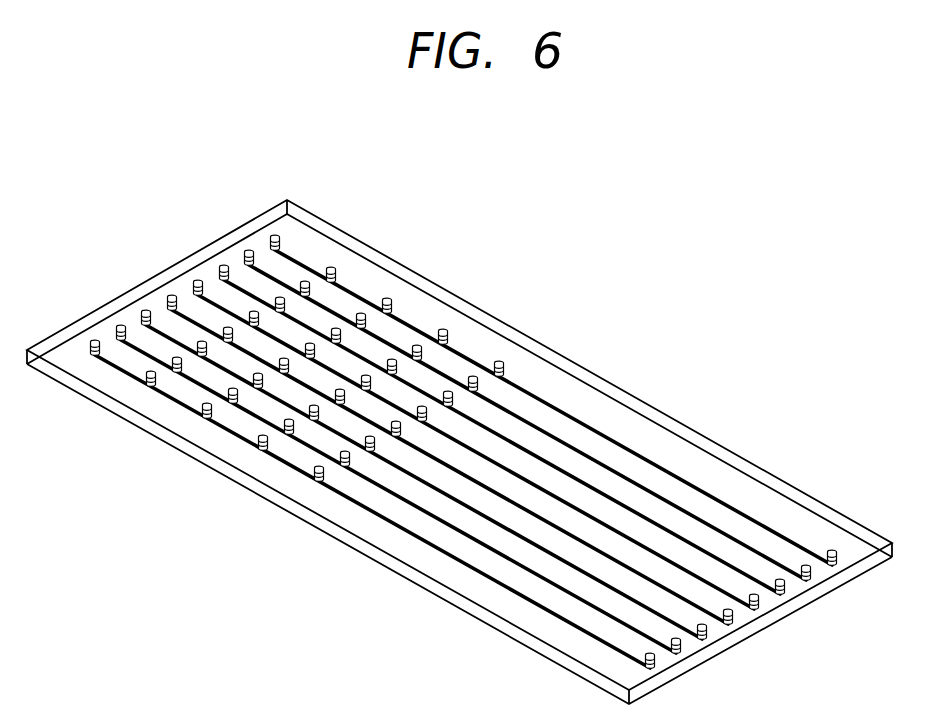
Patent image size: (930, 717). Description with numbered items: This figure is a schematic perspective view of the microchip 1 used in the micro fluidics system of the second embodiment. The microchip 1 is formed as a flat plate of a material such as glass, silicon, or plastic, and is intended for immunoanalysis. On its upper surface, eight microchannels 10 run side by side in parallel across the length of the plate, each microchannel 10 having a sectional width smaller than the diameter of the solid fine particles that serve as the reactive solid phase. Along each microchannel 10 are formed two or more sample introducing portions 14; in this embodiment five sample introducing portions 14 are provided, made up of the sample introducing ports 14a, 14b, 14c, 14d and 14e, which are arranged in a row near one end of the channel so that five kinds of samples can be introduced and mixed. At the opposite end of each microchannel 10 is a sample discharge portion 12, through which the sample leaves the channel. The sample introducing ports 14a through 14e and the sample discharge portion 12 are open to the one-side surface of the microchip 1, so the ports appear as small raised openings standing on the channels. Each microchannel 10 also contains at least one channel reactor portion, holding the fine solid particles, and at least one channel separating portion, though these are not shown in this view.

The microchip 1 is at (495, 630).
The microchannel 10 is at (673, 466).
The sample discharge portion 12 is at (834, 552).
The sample introducing portions 14 is at (673, 307).
The sample introducing port 14a is at (502, 370).
The sample introducing port 14b is at (446, 338).
The sample introducing port 14c is at (390, 307).
The sample introducing port 14d is at (334, 276).
The sample introducing port 14e is at (279, 243).